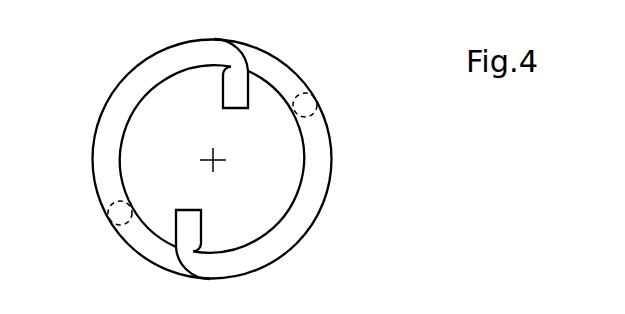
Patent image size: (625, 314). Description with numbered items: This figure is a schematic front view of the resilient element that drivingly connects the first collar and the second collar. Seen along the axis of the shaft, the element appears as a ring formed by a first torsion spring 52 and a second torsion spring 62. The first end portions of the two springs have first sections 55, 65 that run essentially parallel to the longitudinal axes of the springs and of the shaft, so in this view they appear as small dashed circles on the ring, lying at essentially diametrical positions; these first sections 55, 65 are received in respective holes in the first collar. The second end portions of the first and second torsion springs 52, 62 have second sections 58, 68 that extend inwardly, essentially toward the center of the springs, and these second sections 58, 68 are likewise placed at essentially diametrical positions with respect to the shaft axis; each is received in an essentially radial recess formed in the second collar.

The first torsion spring 52 is at (309, 201).
The second torsion spring 62 is at (111, 118).
The second section 58 is at (233, 87).
The second section 68 is at (190, 233).
The first section 65 is at (318, 100).
The first section 55 is at (110, 218).